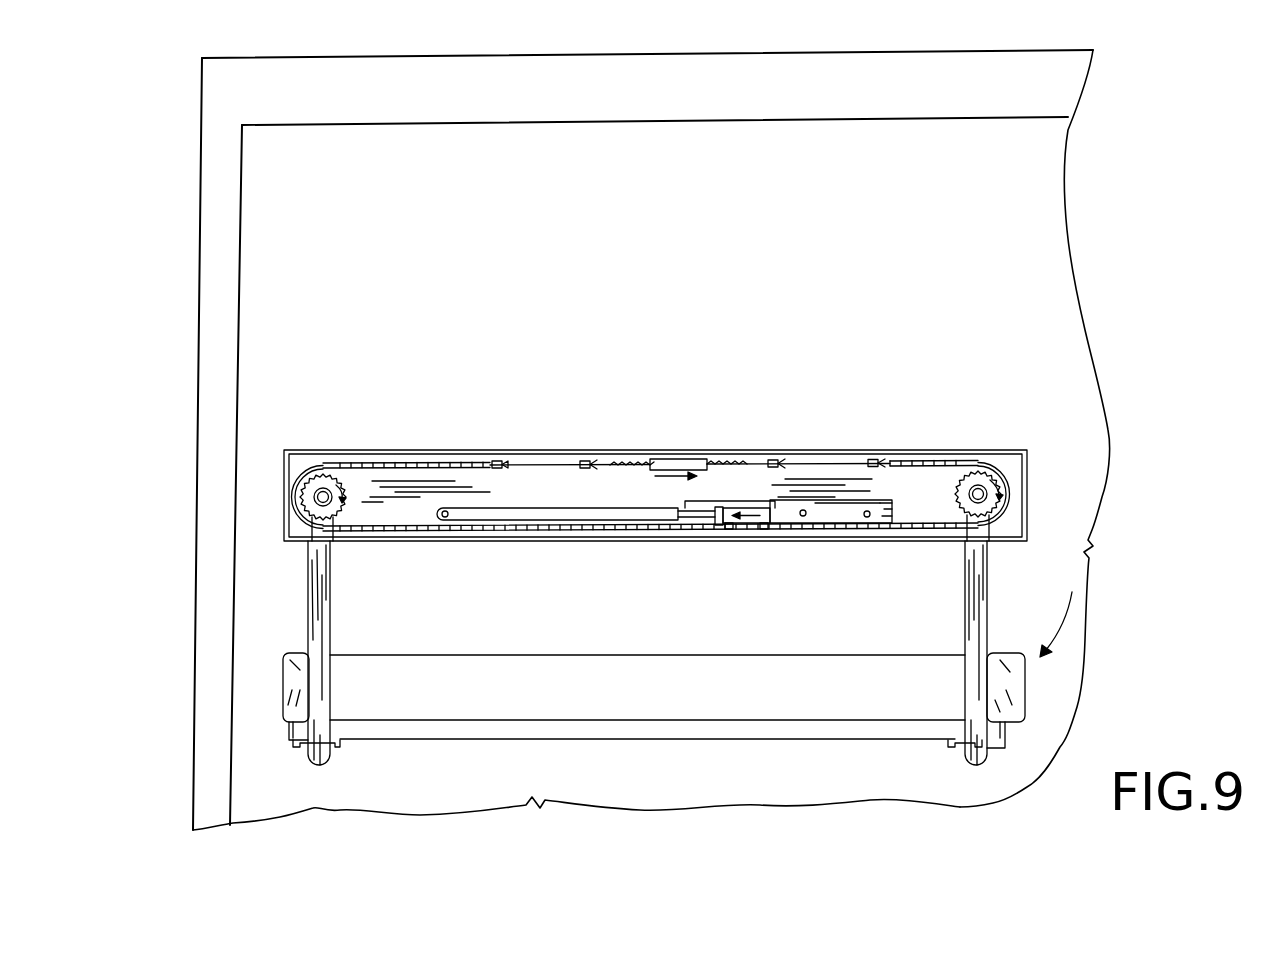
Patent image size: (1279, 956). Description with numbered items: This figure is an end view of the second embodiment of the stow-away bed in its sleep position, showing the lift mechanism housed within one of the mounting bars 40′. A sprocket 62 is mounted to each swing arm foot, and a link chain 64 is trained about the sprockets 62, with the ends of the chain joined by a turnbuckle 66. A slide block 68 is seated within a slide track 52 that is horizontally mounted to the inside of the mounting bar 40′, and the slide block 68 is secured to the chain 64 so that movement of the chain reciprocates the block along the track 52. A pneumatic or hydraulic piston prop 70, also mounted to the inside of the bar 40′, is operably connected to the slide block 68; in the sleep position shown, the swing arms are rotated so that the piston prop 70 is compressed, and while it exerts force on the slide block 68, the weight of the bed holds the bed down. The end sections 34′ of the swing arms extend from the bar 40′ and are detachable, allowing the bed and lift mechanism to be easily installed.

The mounting bar 40′ is at (312, 453).
The sprocket 62 is at (336, 470).
The link chain 64 is at (413, 463).
The turnbuckle 66 is at (680, 468).
The slide block 68 is at (760, 522).
The piston prop 70 is at (533, 520).
The slide track 52 is at (838, 514).
The end section 34′ is at (318, 663).